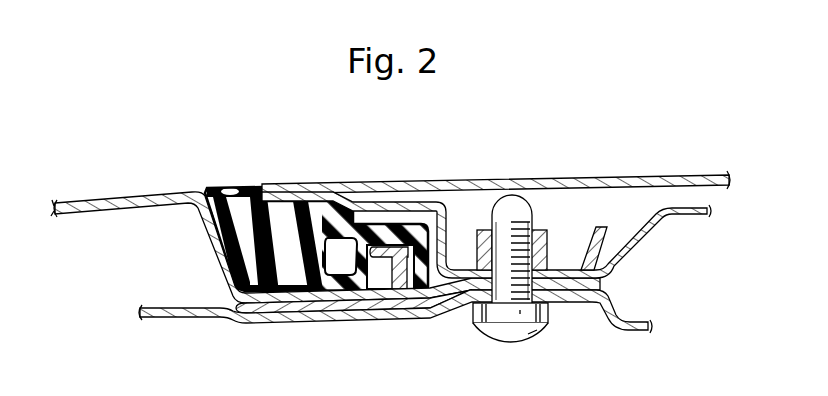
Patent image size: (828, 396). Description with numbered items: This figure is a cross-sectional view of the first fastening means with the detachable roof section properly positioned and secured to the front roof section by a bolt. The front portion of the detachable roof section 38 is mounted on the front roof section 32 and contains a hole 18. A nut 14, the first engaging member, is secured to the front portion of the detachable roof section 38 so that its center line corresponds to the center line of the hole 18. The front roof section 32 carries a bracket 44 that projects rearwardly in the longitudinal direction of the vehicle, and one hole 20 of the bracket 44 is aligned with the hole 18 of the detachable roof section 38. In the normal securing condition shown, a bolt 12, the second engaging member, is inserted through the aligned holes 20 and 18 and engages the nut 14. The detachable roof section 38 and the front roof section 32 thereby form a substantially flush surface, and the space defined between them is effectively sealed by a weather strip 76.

The bolt 12 is at (538, 333).
The nut 14 is at (543, 236).
The hole 18 is at (514, 275).
The hole 20 is at (511, 292).
The front roof section 32 is at (181, 184).
The detachable roof section 38 is at (551, 168).
The bracket 44 is at (366, 314).
The weather strip 76 is at (228, 186).